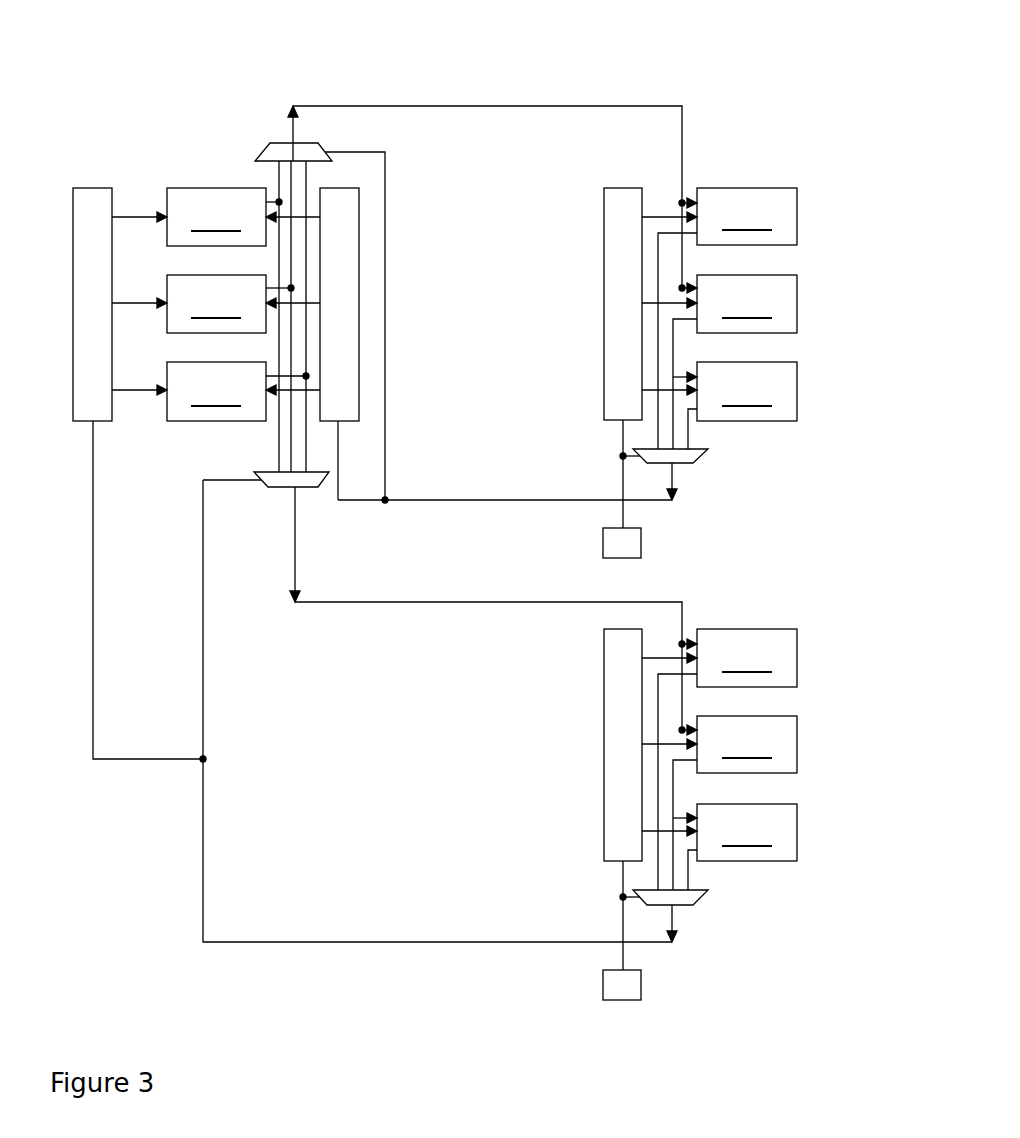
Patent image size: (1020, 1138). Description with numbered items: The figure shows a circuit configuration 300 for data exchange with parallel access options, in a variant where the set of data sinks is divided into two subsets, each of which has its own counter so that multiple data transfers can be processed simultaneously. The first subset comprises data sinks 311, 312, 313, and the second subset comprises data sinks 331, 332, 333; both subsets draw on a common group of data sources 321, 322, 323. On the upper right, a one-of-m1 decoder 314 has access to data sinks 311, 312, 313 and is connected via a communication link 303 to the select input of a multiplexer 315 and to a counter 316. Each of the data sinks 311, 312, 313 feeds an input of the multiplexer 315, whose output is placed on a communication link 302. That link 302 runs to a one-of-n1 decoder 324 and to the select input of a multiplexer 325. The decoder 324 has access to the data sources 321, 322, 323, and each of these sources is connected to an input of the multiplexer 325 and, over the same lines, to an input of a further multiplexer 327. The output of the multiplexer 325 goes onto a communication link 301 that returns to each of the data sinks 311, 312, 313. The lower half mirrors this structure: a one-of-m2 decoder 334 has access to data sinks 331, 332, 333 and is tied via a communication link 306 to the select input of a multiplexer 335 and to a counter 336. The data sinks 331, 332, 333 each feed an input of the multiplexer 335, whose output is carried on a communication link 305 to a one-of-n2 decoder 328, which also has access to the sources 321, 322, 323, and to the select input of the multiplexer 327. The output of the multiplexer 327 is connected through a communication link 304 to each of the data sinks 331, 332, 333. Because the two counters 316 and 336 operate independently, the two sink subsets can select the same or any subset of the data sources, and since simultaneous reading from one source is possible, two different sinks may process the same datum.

The circuit configuration 300 is at (424, 80).
The communication link 301 is at (553, 112).
The communication link 302 is at (503, 502).
The communication link 303 is at (617, 432).
The communication link 304 is at (548, 608).
The communication link 305 is at (353, 946).
The communication link 306 is at (617, 875).
The data sink 311 is at (727, 318).
The data sink 312 is at (735, 362).
The data sink 313 is at (735, 405).
The 1-of-m1 decoder 314 is at (603, 332).
The multiplexer 315 is at (702, 460).
The counter 316 is at (645, 542).
The data source 321 is at (224, 217).
The data source 322 is at (230, 304).
The data source 323 is at (238, 391).
The 1-of-n1 decoder 324 is at (361, 411).
The multiplexer 325 is at (257, 148).
The multiplexer 327 is at (325, 481).
The 1-of-n2 decoder 328 is at (85, 423).
The data sink 331 is at (727, 759).
The data sink 332 is at (735, 803).
The data sink 333 is at (735, 847).
The 1-of-m2 decoder 334 is at (603, 773).
The multiplexer 335 is at (702, 902).
The counter 336 is at (645, 985).